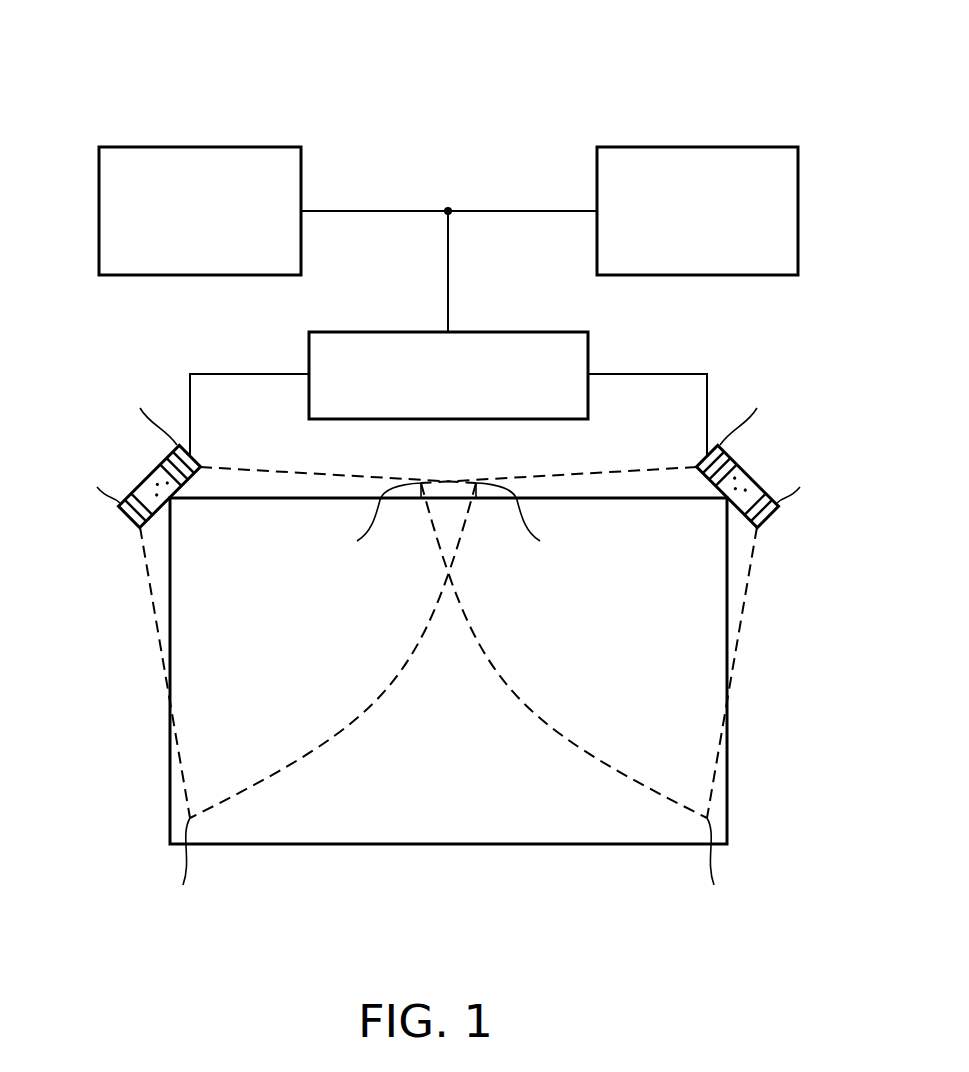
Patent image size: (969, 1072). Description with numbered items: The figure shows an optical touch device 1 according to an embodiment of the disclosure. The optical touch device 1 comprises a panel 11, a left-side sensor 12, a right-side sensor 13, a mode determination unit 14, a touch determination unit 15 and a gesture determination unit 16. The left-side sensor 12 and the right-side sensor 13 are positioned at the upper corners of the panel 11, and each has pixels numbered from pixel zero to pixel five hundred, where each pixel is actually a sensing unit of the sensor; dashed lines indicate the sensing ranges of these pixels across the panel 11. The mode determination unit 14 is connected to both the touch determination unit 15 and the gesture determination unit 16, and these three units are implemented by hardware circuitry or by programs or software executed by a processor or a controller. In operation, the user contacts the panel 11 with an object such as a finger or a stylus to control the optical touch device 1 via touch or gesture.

The optical touch device 1 is at (51, 62).
The panel 11 is at (447, 845).
The left-side sensor 12 is at (150, 472).
The right-side sensor 13 is at (747, 472).
The mode determination unit 14 is at (310, 333).
The touch determination unit 15 is at (100, 148).
The gesture determination unit 16 is at (598, 148).